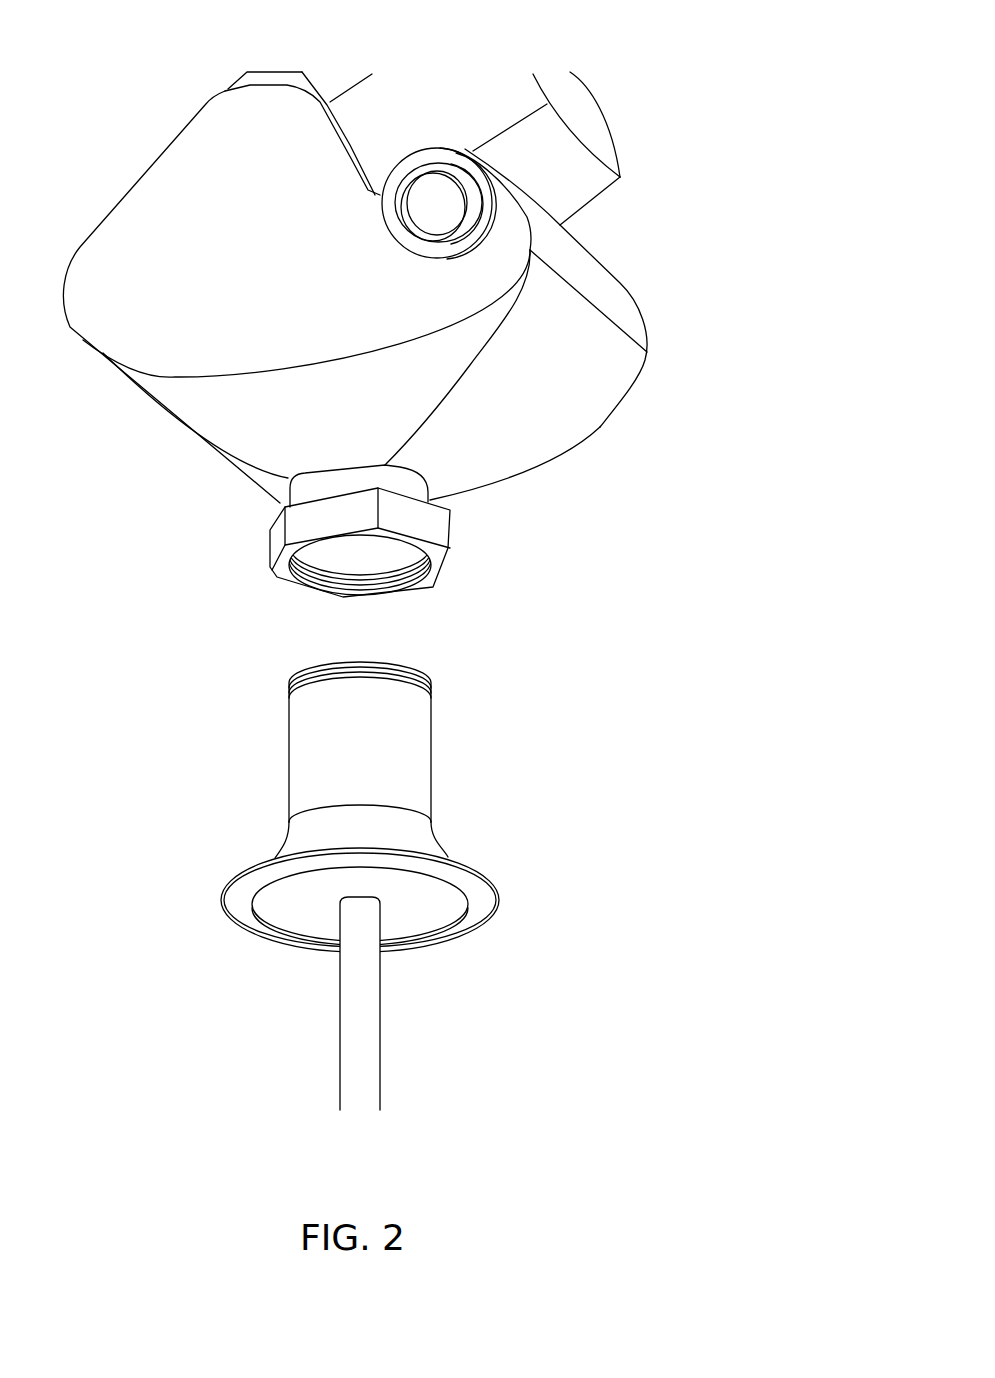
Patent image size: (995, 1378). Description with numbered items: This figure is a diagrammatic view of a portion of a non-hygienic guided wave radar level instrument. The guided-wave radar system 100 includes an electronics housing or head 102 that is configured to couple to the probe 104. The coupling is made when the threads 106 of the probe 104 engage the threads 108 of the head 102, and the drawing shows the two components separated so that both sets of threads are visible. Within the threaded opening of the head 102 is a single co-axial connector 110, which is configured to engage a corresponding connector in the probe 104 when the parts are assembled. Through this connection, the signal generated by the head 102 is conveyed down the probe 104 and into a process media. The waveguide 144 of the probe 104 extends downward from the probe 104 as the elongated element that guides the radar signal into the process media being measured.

The guided-wave radar system 100 is at (704, 137).
The electronics housing or head 102 is at (597, 427).
The probe 104 is at (440, 850).
The threads of probe 106 is at (433, 690).
The threads of head 108 is at (403, 570).
The co-axial connector 110 is at (355, 550).
The waveguide 144 is at (380, 1040).